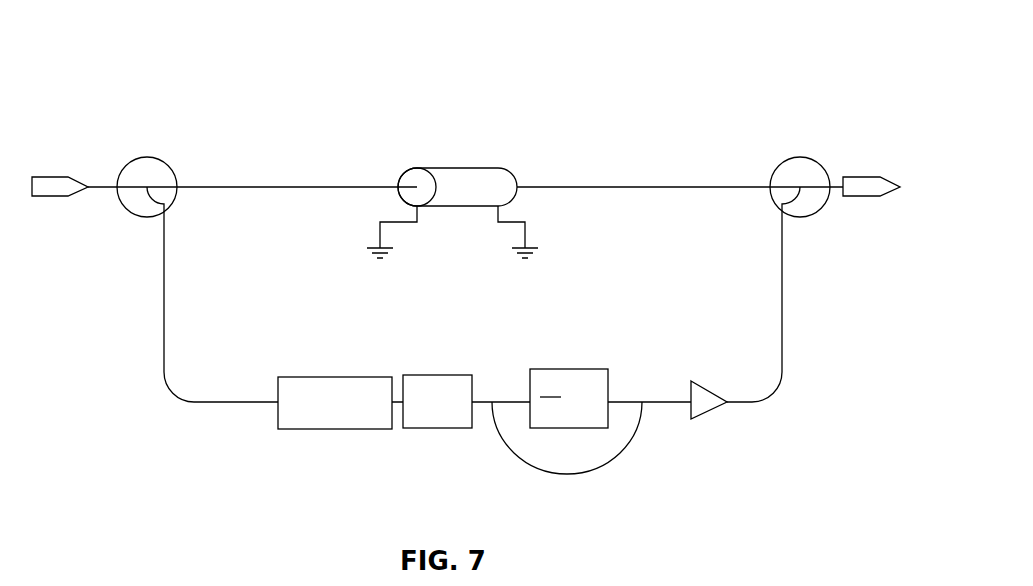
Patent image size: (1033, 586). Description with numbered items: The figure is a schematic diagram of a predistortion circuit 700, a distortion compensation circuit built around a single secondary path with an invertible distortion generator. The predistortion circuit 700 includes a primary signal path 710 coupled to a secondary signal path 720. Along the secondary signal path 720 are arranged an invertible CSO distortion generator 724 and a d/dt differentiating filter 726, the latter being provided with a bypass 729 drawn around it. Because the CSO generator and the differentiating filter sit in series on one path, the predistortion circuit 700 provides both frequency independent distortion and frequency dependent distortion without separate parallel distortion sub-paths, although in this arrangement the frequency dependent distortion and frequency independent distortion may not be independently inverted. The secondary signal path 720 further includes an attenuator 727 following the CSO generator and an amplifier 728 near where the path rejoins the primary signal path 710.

The predistortion circuit 700 is at (280, 100).
The primary signal path 710 is at (673, 151).
The secondary signal path 720 is at (118, 365).
The invertible CSO distortion generator 724 is at (352, 377).
The d/dt differentiating filter 726 is at (568, 369).
The attenuator 727 is at (430, 375).
The amplifier 728 is at (712, 422).
The bypass 729 is at (590, 474).